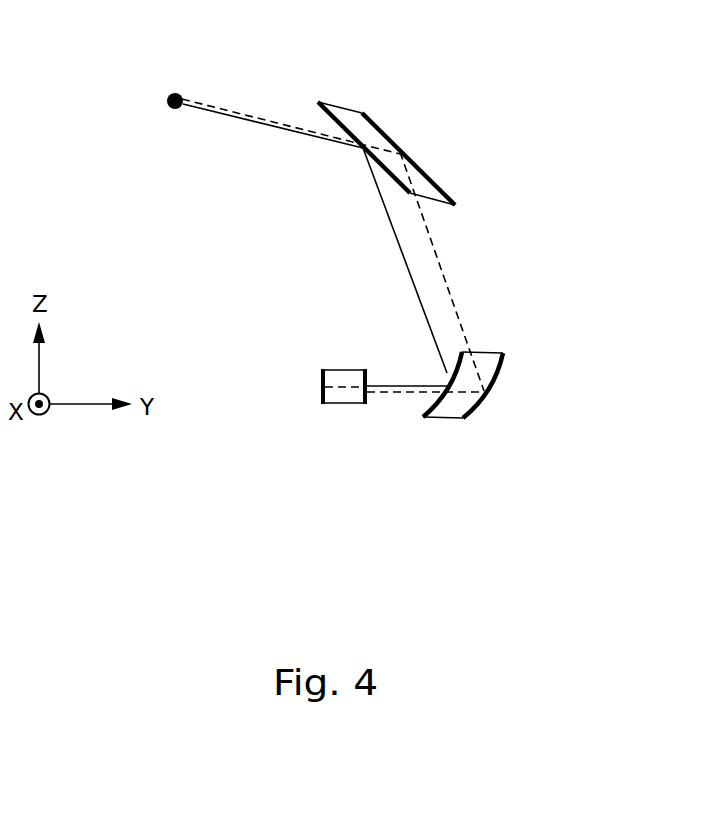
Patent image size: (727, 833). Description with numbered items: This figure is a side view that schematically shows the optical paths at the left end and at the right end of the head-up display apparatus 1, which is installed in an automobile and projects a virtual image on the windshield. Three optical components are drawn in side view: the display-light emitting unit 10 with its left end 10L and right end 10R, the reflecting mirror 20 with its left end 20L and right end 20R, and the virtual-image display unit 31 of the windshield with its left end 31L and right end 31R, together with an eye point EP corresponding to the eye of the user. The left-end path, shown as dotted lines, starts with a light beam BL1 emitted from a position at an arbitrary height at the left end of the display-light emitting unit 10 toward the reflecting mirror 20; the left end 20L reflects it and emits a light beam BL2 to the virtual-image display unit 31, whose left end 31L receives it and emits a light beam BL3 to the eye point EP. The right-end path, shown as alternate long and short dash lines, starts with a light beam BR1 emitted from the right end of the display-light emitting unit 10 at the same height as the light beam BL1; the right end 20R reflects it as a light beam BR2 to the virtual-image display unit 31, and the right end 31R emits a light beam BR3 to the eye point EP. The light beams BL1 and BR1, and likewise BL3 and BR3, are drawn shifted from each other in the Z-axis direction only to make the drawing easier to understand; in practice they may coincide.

The head-up display apparatus 1 is at (443, 552).
The eye point EP is at (171, 94).
The display-light emitting unit 10 is at (300, 367).
The right end of the display-light emitting unit 10R is at (323, 403).
The left end of the display-light emitting unit 10L is at (365, 404).
The reflecting mirror 20 is at (515, 415).
The right end of the reflecting mirror 20R is at (435, 418).
The left end of the reflecting mirror 20L is at (502, 370).
The virtual-image display unit 31 is at (434, 118).
The right end of the virtual-image display unit 31R is at (320, 110).
The left end of the virtual-image display unit 31L is at (372, 117).
The light beam BR1 is at (388, 392).
The light beam BR2 is at (395, 233).
The light beam BR3 is at (227, 118).
The light beam BL1 is at (398, 393).
The light beam BL2 is at (447, 268).
The light beam BL3 is at (248, 115).